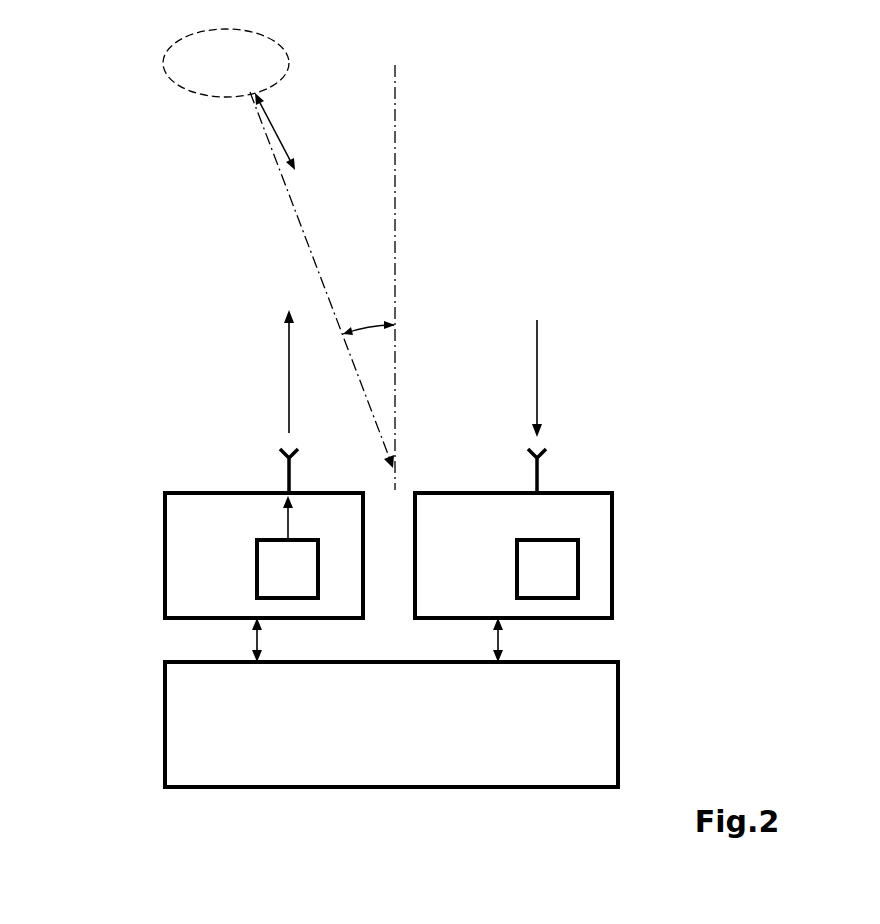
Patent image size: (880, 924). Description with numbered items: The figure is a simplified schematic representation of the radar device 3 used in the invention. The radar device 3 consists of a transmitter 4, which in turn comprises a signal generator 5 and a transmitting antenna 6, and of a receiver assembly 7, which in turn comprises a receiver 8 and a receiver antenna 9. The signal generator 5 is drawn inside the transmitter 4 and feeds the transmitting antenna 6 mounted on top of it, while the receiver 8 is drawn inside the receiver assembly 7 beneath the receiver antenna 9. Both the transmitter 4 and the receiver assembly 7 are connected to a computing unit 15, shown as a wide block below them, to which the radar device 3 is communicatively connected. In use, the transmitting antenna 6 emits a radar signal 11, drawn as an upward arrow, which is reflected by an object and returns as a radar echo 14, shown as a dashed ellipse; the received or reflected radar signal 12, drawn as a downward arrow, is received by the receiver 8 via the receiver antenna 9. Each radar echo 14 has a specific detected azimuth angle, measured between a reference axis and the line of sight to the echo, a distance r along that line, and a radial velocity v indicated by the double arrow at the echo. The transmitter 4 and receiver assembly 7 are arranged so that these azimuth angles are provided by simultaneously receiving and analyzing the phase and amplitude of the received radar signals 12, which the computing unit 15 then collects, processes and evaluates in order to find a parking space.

The radar device 3 is at (469, 235).
The radar echo 14 is at (173, 48).
The distance r is at (302, 228).
The radial velocity v is at (280, 128).
The radar signal 11 is at (288, 402).
The received radar signal 12 is at (538, 358).
The transmitting antenna 6 is at (287, 470).
The receiver antenna 9 is at (546, 478).
The transmitter 4 is at (264, 555).
The signal generator 5 is at (287, 569).
The receiver assembly 7 is at (513, 555).
The receiver 8 is at (547, 569).
The computing unit 15 is at (391, 702).